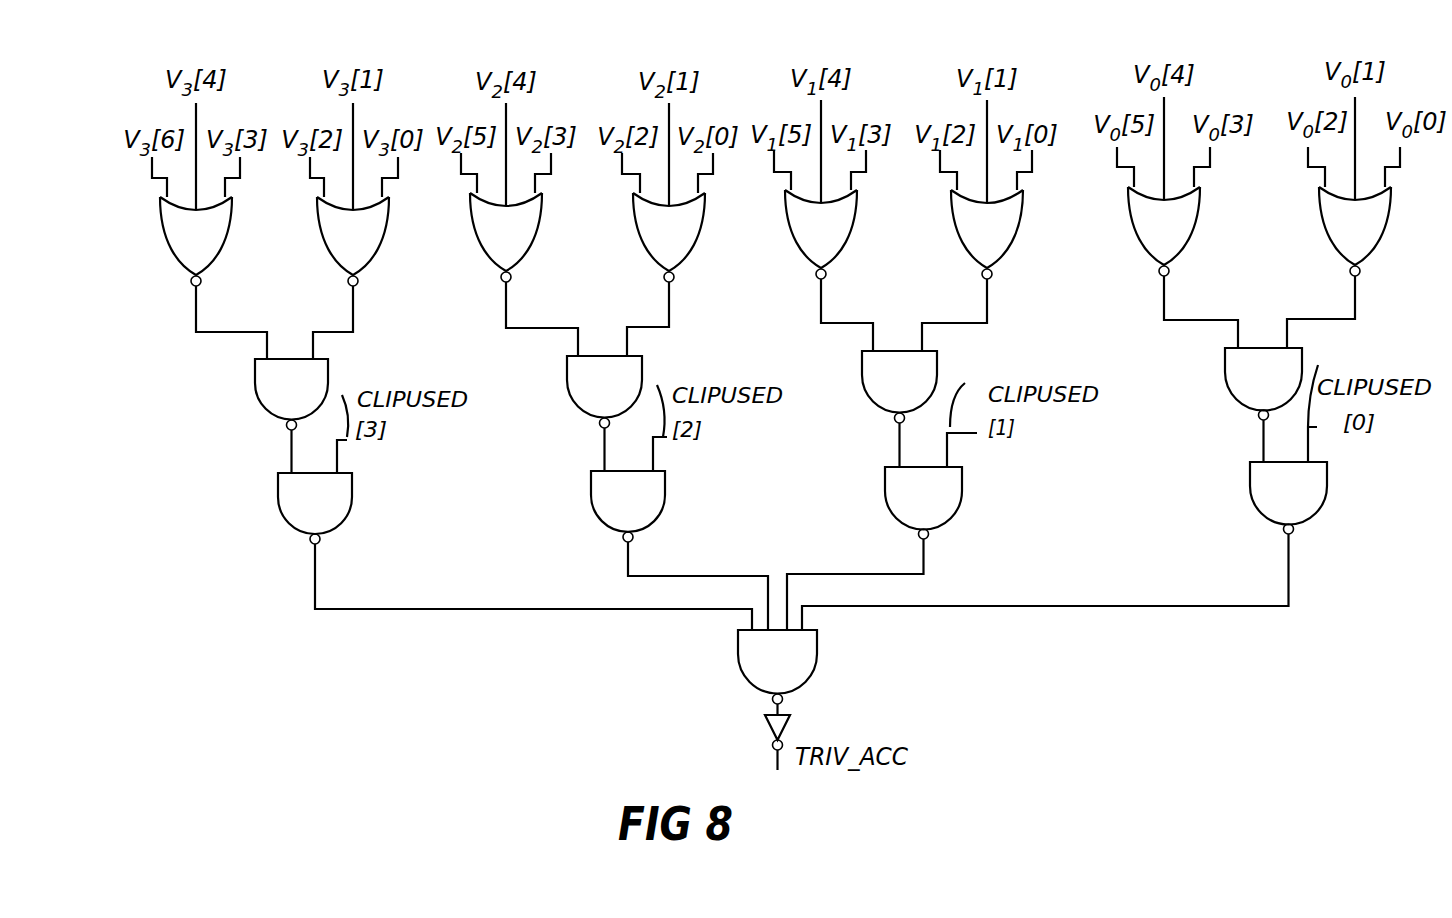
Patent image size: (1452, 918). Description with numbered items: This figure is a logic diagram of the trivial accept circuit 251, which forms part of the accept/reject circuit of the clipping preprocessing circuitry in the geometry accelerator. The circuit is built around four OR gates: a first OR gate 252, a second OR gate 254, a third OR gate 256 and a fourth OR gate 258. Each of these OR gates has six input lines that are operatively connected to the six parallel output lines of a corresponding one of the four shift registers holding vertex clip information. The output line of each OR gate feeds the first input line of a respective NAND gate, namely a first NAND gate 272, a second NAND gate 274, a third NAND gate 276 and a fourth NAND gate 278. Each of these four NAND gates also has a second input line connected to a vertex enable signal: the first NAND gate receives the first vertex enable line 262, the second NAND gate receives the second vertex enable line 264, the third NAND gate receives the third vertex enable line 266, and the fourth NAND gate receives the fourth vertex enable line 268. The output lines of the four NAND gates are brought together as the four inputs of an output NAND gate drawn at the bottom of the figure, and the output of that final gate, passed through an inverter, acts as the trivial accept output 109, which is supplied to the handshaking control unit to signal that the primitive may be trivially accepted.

The trivial accept circuit 251 is at (520, 719).
The first OR gate 252 is at (1371, 320).
The second OR gate 254 is at (1009, 332).
The third OR gate 256 is at (686, 334).
The fourth OR gate 258 is at (376, 338).
The first vertex enable line 262 is at (1295, 405).
The second vertex enable line 264 is at (932, 409).
The third vertex enable line 266 is at (630, 413).
The fourth vertex enable line 268 is at (314, 416).
The first NAND gate 272 is at (1318, 510).
The second NAND gate 274 is at (953, 513).
The third NAND gate 276 is at (665, 510).
The fourth NAND gate 278 is at (343, 520).
The trivial accept output line 109 is at (775, 760).